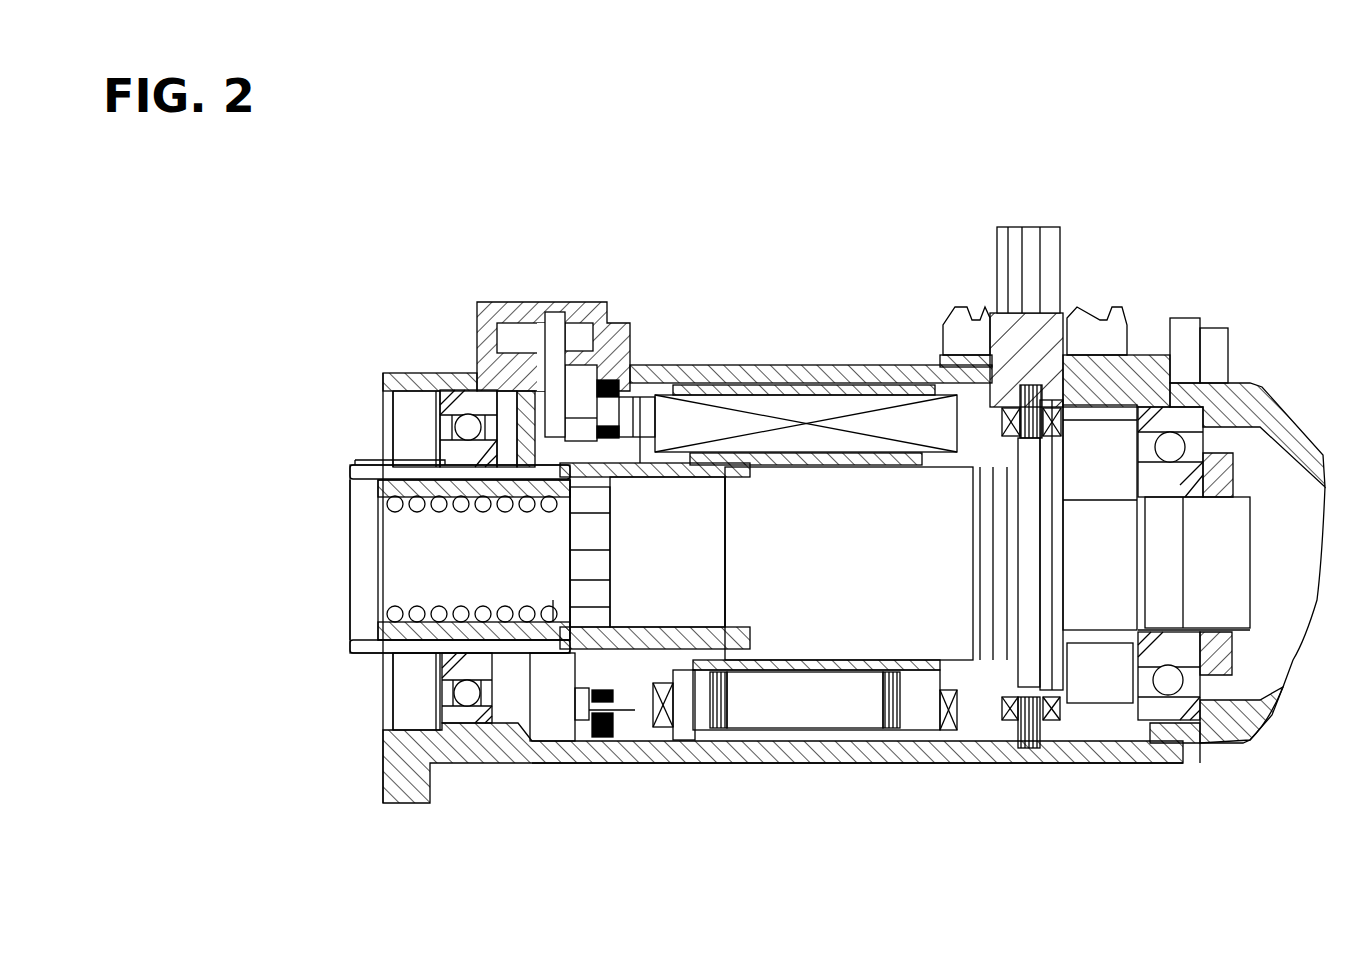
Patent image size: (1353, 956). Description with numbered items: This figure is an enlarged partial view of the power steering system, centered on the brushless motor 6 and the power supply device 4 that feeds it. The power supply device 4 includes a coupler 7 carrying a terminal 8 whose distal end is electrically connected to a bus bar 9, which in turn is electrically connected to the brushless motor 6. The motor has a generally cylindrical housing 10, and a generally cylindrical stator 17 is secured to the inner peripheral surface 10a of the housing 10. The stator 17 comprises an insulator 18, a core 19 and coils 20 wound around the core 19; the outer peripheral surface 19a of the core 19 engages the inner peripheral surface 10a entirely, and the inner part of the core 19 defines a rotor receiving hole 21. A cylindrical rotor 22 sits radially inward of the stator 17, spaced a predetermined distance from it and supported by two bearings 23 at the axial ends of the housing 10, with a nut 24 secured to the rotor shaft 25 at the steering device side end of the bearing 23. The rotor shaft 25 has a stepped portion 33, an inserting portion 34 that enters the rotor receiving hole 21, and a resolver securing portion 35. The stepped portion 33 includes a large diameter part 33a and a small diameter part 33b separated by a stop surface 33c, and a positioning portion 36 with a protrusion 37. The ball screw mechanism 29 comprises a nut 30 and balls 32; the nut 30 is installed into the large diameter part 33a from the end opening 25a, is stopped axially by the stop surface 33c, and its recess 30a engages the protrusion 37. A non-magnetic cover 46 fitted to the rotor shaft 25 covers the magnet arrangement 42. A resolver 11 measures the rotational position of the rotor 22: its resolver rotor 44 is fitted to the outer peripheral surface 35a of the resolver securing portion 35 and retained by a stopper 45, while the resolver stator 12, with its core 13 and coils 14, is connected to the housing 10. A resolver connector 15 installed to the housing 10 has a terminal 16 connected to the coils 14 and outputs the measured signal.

The power supply device 4 is at (425, 268).
The brushless motor 6 is at (740, 240).
The coupler 7 is at (594, 302).
The terminal 8 is at (556, 320).
The bus bar 9 is at (625, 397).
The housing 10 is at (676, 365).
The inner peripheral surface 10a is at (768, 745).
The resolver 11 is at (1100, 537).
The resolver stator 12 is at (1072, 808).
The core 13 is at (1020, 745).
The coils 14 is at (1052, 722).
The resolver connector 15 is at (1000, 257).
The terminal 16 is at (1028, 275).
The stator 17 is at (742, 763).
The insulator 18 is at (805, 700).
The core 19 is at (832, 718).
The outer peripheral surface 19a is at (810, 382).
The coils 20 is at (750, 398).
The rotor receiving hole 21 is at (793, 470).
The rotor 22 is at (372, 460).
The bearings 23 is at (460, 723).
The nut 24 is at (1233, 480).
The rotor shaft 25 is at (655, 480).
The end opening 25a is at (350, 560).
The ball screw mechanism 29 is at (362, 492).
The nut 30 is at (385, 620).
The recess 30a is at (563, 745).
The balls 32 is at (458, 525).
The stepped portion 33 is at (550, 645).
The large diameter part 33a is at (474, 608).
The small diameter part 33b is at (625, 480).
The stop surface 33c is at (548, 500).
The inserting portion 34 is at (660, 635).
The resolver securing portion 35 is at (1132, 578).
The outer peripheral surface 35a is at (1095, 652).
The positioning portion 36 is at (602, 575).
The protrusion 37 is at (550, 605).
The magnet arrangement 42 is at (690, 478).
The resolver rotor 44 is at (1045, 574).
The stopper 45 is at (1055, 612).
The cover 46 is at (879, 497).